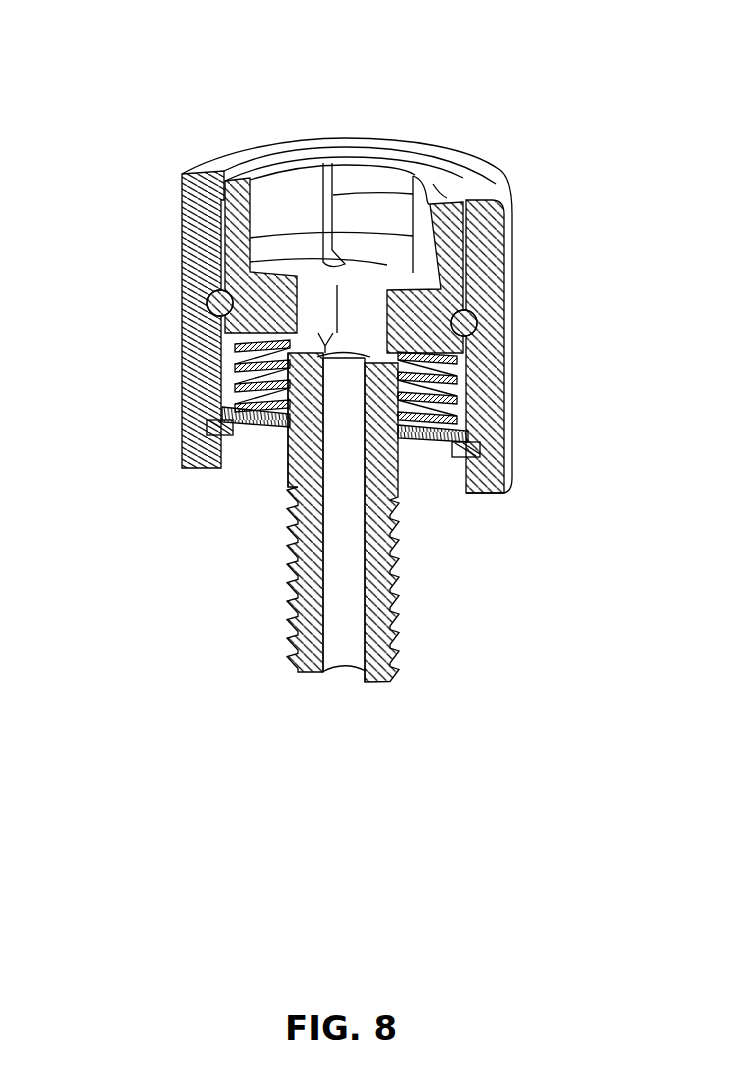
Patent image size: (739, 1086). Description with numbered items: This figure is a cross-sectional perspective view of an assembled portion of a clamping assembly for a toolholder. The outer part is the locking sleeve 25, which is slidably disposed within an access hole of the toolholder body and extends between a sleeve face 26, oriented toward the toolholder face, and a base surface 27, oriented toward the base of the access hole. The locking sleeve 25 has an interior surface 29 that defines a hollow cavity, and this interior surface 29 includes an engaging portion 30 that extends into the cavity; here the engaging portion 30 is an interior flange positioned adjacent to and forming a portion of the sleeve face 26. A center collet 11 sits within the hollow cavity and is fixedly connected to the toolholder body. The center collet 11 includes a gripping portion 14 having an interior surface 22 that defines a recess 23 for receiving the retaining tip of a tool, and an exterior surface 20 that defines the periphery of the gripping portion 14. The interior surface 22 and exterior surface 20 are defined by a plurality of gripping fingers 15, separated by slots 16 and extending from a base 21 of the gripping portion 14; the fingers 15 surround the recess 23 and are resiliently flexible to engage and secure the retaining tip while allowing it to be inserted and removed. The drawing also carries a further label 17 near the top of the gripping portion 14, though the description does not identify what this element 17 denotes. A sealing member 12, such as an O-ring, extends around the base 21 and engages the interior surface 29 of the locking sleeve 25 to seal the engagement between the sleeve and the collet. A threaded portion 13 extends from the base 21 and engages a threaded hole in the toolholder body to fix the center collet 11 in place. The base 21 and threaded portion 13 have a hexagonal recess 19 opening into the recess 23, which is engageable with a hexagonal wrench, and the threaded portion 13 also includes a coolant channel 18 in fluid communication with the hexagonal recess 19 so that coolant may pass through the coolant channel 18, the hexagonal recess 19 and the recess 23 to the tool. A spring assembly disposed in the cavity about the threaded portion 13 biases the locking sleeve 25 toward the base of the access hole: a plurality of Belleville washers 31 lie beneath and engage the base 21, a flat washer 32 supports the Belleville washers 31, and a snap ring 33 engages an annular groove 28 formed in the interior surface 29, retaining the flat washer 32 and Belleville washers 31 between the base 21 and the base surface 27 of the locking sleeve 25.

The center collet 11 is at (432, 318).
The sealing member 12 is at (503, 343).
The threaded portion 13 is at (400, 603).
The gripping portion 14 is at (256, 252).
The gripping fingers 15 is at (463, 200).
The slots 16 is at (328, 194).
The piston top edge 17 is at (280, 192).
The coolant channel 18 is at (345, 645).
The hexagonal recess 19 is at (323, 352).
The exterior surface 20 is at (222, 212).
The base 21 is at (237, 338).
The interior surface 22 is at (455, 262).
The recess 23 is at (377, 208).
The locking sleeve 25 is at (508, 418).
The sleeve face 26 is at (433, 152).
The base surface 27 is at (485, 495).
The annular groove 28 is at (240, 448).
The interior surface 29 is at (289, 448).
The engaging portion 30 is at (472, 222).
The Belleville washers 31 is at (443, 388).
The flat washer 32 is at (213, 416).
The snap ring 33 is at (482, 450).